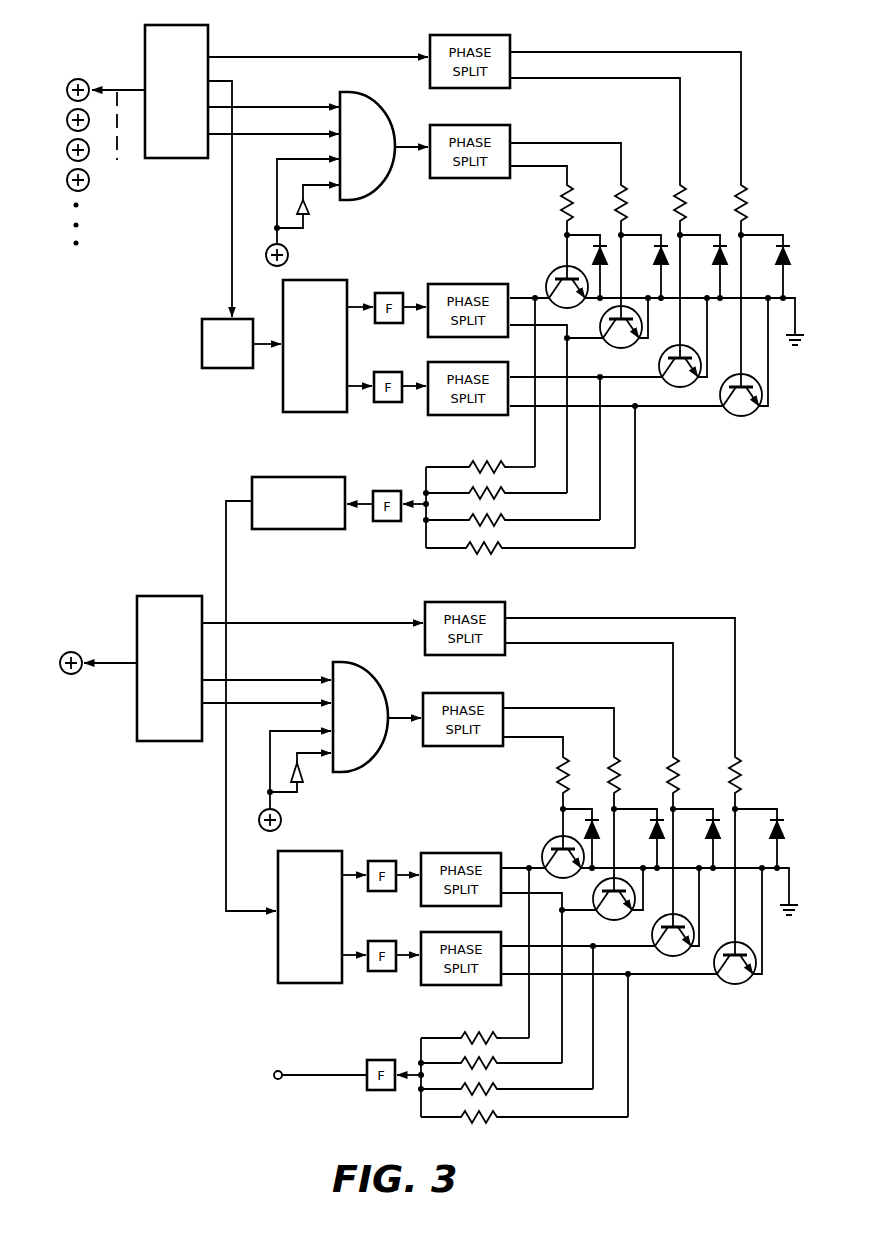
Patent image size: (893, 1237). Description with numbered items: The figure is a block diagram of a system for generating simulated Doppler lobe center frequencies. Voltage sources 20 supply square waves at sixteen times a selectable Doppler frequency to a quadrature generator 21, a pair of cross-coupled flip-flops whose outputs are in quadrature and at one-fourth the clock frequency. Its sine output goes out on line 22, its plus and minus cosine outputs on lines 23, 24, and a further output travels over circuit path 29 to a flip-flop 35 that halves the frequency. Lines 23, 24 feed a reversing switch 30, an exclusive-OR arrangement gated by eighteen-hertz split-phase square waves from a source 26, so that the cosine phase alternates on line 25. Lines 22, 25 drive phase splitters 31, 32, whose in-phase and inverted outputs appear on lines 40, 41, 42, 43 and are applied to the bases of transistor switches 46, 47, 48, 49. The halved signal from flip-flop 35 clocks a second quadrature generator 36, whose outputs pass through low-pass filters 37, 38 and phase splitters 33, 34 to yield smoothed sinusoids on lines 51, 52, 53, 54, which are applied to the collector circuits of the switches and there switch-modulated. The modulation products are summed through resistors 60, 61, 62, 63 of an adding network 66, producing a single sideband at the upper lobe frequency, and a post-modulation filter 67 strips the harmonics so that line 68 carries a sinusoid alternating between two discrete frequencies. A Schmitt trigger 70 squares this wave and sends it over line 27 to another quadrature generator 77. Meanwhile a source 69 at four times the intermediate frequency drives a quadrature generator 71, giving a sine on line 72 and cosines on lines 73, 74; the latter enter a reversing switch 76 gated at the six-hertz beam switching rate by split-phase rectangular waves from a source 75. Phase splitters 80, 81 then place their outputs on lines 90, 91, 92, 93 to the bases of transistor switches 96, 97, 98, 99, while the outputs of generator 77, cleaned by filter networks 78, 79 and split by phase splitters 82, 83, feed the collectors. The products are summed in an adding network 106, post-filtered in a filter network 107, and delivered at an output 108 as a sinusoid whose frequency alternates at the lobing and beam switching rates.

The voltage sources 20 is at (85, 56).
The quadrature generator 21 is at (174, 160).
The line 22 is at (285, 55).
The line 23 is at (285, 106).
The line 24 is at (258, 136).
The line 25 is at (410, 145).
The source means 26 is at (287, 237).
The line 27 is at (224, 548).
The circuit path means 29 is at (230, 265).
The reversing switch 30 is at (362, 198).
The phase splitter 31 is at (429, 36).
The phase splitter 32 is at (475, 179).
The phase splitter 33 is at (470, 283).
The phase splitter 34 is at (470, 416).
The flip-flop 35 is at (227, 370).
The second quadrature generator 36 is at (322, 414).
The low-pass filter 37 is at (390, 292).
The low-pass filter 38 is at (388, 402).
The line 40 is at (602, 51).
The line 41 is at (600, 80).
The line 42 is at (548, 142).
The line 43 is at (540, 168).
The electronic switch 46 is at (740, 417).
The electronic switch 47 is at (657, 367).
The electronic switch 48 is at (607, 350).
The electronic switch 49 is at (552, 268).
The line 51 is at (522, 408).
The line 52 is at (554, 375).
The line 53 is at (522, 327).
The line 54 is at (520, 296).
The resistor 60 is at (637, 448).
The resistor 61 is at (602, 448).
The resistor 62 is at (569, 448).
The resistor 63 is at (538, 448).
The adding network 66 is at (521, 562).
The post-modulation filtering network 67 is at (386, 523).
The line 68 is at (365, 492).
The voltage source 69 is at (72, 651).
The Schmitt trigger 70 is at (312, 531).
The quadrature generator 71 is at (170, 743).
The line 72 is at (285, 622).
The line 73 is at (285, 679).
The line 74 is at (253, 706).
The source 75 is at (281, 801).
The reversing switch 76 is at (360, 775).
The quadrature generator 77 is at (310, 985).
The filter network 78 is at (380, 860).
The filter network 79 is at (382, 972).
The phase splitter 80 is at (424, 604).
The phase splitter 81 is at (462, 748).
The phase splitter 82 is at (462, 852).
The phase splitter 83 is at (462, 988).
The line 90 is at (603, 617).
The line 91 is at (603, 645).
The line 92 is at (548, 707).
The line 93 is at (537, 739).
The transistor switch 96 is at (735, 990).
The transistor switch 97 is at (652, 935).
The transistor switch 98 is at (600, 920).
The transistor switch 99 is at (547, 842).
The adding network 106 is at (522, 1130).
The filter network 107 is at (382, 1091).
The output terminal 108 is at (278, 1080).